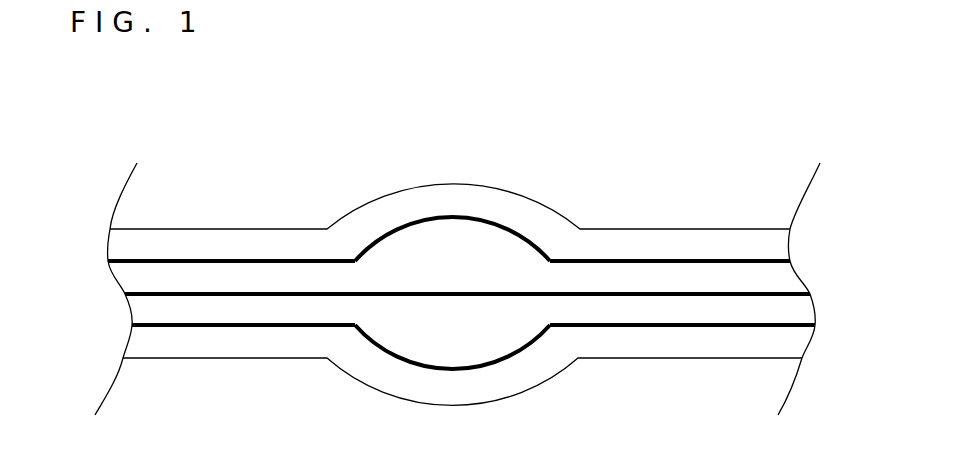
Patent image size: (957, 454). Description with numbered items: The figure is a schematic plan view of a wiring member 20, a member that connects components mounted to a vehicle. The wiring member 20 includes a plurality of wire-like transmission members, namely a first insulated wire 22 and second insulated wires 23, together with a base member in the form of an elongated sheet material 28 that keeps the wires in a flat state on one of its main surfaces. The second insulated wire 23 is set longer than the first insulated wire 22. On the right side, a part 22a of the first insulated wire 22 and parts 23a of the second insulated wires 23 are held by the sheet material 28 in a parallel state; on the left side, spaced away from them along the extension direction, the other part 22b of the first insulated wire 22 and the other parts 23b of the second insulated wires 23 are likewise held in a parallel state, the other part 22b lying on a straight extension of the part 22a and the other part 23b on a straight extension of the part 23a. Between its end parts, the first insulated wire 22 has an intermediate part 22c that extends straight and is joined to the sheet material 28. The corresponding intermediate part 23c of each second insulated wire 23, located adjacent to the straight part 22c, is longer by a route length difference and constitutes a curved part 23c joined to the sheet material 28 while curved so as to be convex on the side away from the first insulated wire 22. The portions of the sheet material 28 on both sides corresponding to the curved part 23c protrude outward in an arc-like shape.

The wiring member 20 is at (542, 156).
The first insulated wire 22 is at (462, 232).
The part of the first insulated wire 22a is at (790, 293).
The other part of the first insulated wire 22b is at (148, 293).
The intermediate part of the first insulated wire 22c is at (413, 292).
The second insulated wire 23 is at (461, 291).
The part of the second insulated wire 23a is at (740, 259).
The other part of the second insulated wire 23b is at (222, 258).
The curved part of the second insulated wire 23c is at (488, 223).
The sheet material 28 is at (302, 229).